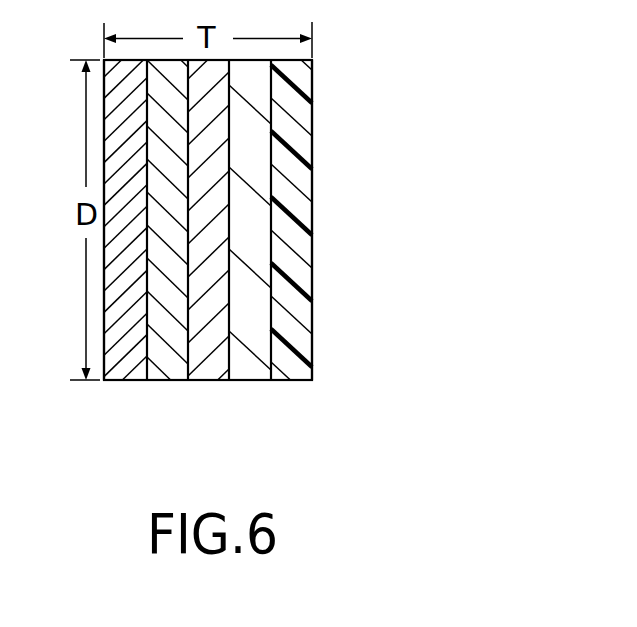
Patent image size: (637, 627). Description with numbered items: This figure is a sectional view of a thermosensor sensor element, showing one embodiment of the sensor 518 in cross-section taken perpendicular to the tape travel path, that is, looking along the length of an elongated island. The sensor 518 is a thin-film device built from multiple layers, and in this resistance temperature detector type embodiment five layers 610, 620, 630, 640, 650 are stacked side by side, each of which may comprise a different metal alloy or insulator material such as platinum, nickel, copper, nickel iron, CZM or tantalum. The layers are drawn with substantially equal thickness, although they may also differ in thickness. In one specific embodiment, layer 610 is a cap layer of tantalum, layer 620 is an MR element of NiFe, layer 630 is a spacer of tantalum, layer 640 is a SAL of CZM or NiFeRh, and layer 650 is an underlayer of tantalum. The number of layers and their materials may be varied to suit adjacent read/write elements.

The sensor 518 is at (322, 117).
The cap layer 610 is at (127, 382).
The MR element 620 is at (175, 382).
The spacer 630 is at (222, 382).
The SAL 640 is at (265, 382).
The underlayer 650 is at (317, 382).